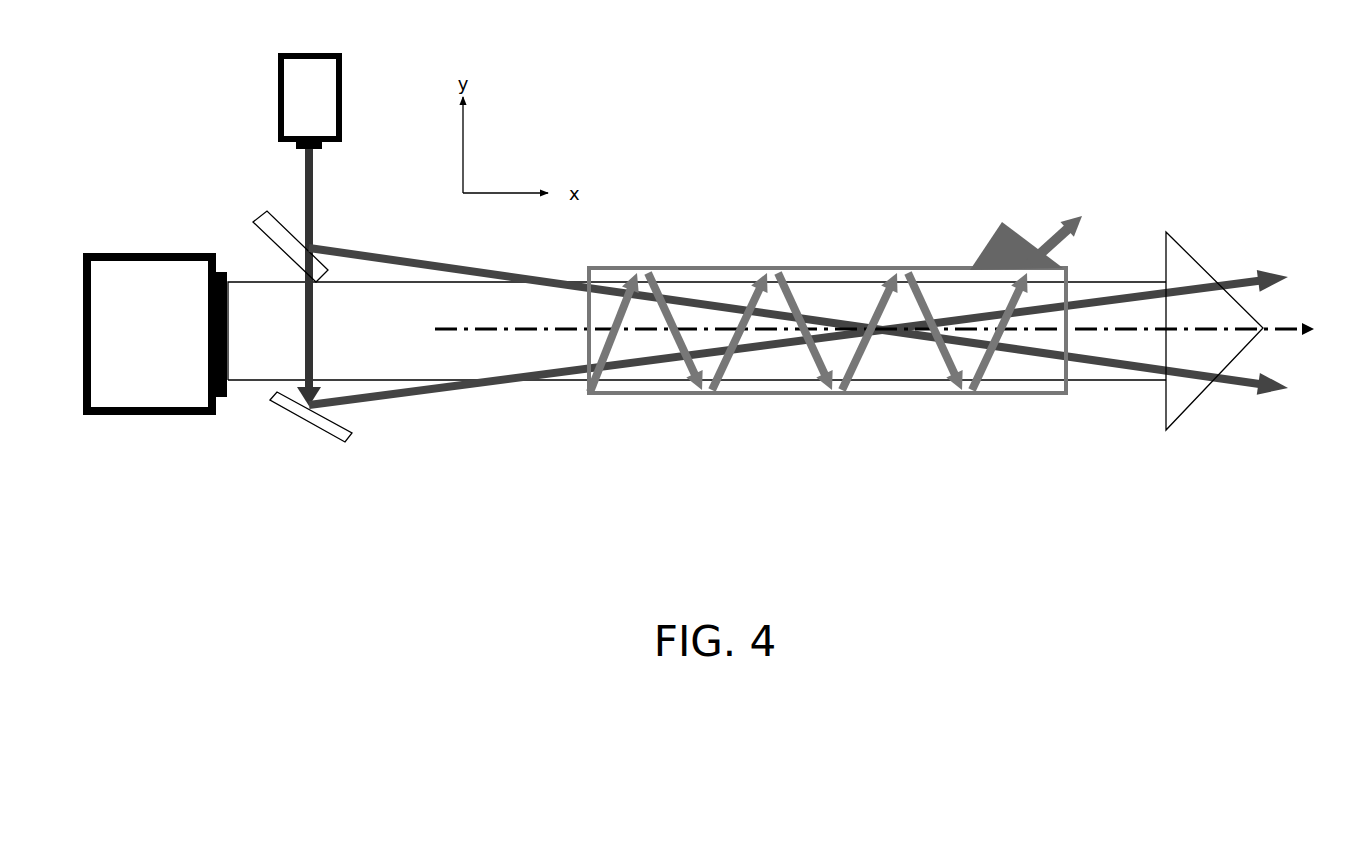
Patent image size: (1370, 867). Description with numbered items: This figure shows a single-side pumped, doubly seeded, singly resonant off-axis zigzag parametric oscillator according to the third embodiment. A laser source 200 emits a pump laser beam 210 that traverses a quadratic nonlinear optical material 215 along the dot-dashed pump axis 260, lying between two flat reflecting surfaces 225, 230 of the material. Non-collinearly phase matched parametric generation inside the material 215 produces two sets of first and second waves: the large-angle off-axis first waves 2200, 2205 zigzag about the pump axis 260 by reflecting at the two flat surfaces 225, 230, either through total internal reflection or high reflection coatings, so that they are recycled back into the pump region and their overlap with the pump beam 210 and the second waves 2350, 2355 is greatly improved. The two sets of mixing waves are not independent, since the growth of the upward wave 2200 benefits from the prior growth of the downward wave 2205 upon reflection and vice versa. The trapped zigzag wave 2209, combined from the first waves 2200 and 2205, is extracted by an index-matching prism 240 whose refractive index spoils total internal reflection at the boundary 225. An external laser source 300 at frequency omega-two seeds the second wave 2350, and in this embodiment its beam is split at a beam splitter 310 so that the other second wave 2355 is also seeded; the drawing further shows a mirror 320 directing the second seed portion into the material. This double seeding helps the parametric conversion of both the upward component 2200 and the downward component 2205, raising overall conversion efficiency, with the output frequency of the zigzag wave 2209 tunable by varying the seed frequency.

The laser source 200 is at (157, 334).
The pump laser beam 210 is at (249, 388).
The quadratic nonlinear optical material 215 is at (645, 340).
The flat reflecting surface 225 is at (822, 260).
The flat reflecting surface 230 is at (897, 400).
The index-matching prism 240 is at (973, 236).
The pump axis 260 is at (898, 330).
The external laser source 300 is at (310, 231).
The beam splitter 310 is at (288, 235).
The second mirror 320 is at (304, 424).
The parametrically generated first wave 2200 is at (748, 296).
The parametrically generated first wave 2205 is at (808, 364).
The zigzag wave 2209 is at (1090, 232).
The parametrically generated second wave 2350 is at (1233, 394).
The parametrically generated second wave 2355 is at (1237, 268).